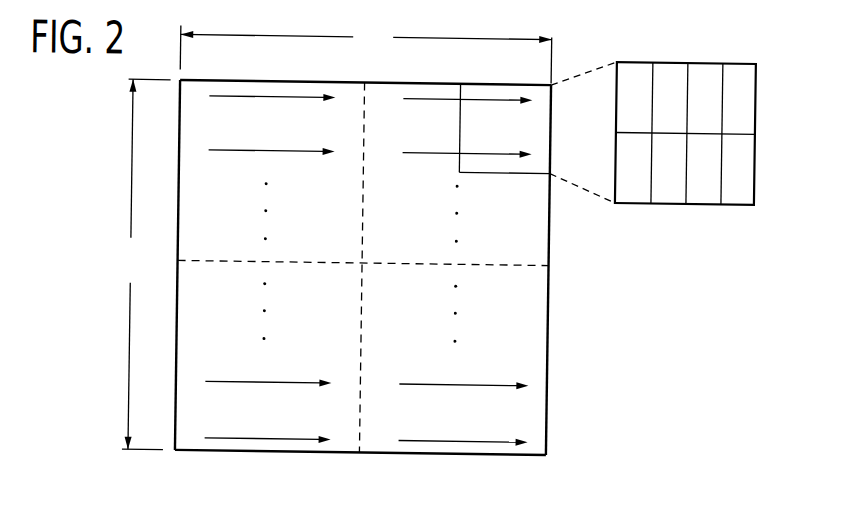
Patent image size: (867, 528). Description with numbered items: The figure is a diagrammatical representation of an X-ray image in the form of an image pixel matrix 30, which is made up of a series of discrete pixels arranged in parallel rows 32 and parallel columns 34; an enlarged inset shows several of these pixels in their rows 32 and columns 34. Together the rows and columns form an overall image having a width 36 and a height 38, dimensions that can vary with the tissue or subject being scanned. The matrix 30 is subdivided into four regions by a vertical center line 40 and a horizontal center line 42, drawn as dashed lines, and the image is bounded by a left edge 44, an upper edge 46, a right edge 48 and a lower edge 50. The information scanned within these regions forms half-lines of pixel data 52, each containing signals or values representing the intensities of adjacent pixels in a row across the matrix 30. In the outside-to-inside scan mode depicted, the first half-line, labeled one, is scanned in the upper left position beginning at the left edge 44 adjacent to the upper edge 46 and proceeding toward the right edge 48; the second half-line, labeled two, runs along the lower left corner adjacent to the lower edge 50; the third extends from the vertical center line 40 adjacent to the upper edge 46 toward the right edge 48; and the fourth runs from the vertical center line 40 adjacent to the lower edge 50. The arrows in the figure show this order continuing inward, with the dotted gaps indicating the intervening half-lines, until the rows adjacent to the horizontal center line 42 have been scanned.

The image pixel matrix 30 is at (596, 374).
The parallel rows 32 is at (615, 112).
The parallel columns 34 is at (730, 200).
The width 36 is at (366, 52).
The height 38 is at (142, 264).
The vertical center line 40 is at (361, 436).
The horizontal center line 42 is at (521, 264).
The left edge 44 is at (178, 118).
The upper edge 46 is at (197, 82).
The right edge 48 is at (548, 229).
The lower edge 50 is at (254, 453).
The half-lines of pixel data 52 is at (259, 98).